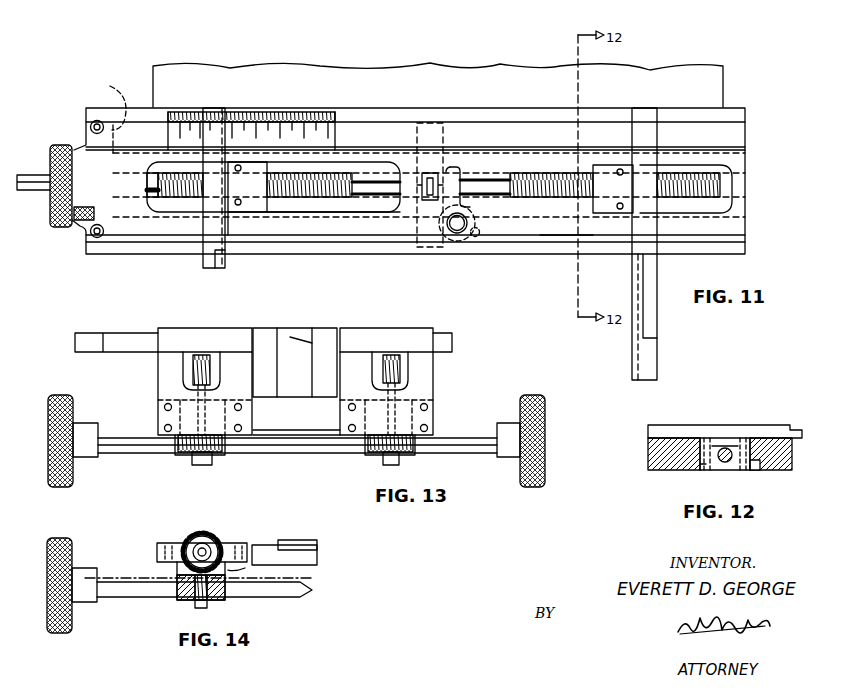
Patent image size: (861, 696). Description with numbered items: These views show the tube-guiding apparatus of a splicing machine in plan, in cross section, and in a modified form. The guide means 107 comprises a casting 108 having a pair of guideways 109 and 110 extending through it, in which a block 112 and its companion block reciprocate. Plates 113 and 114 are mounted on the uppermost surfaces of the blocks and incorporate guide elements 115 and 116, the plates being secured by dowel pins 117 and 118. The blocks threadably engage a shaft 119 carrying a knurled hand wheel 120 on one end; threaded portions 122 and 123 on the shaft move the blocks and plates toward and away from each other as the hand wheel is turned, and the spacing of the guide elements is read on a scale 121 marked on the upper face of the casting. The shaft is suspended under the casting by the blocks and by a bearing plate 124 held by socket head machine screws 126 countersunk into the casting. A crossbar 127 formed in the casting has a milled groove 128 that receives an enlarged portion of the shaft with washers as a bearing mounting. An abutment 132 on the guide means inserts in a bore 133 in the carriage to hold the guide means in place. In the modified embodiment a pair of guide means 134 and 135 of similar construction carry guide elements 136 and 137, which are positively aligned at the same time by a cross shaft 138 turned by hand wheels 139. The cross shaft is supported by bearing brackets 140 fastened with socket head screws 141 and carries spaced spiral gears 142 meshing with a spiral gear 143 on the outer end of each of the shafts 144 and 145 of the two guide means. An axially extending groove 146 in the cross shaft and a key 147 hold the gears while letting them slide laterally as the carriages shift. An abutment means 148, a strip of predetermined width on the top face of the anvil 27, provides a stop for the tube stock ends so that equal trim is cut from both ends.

In FIG. 11, the anvil 27 is at (500, 92).
In FIG. 13, the anvil 27 is at (272, 360).
In FIG. 14, the anvil 27 is at (312, 553).
In FIG. 11, the guide means 107 is at (160, 258).
In FIG. 11, the casting 108 is at (365, 228).
In FIG. 12, the casting 108 is at (648, 440).
In FIG. 11, the guideway 109 is at (320, 214).
In FIG. 11, the guideway 110 is at (550, 215).
In FIG. 12, the guideway 110 is at (748, 462).
In FIG. 12, the block 112 is at (700, 466).
In FIG. 11, the plate 113 is at (233, 215).
In FIG. 11, the plate 114 is at (620, 210).
In FIG. 12, the plate 114 is at (744, 445).
In FIG. 11, the guide element 115 is at (207, 262).
In FIG. 11, the guide element 116 is at (648, 355).
In FIG. 12, the guide element 116 is at (778, 425).
In FIG. 11, the dowel pin 117 is at (242, 205).
In FIG. 11, the dowel pin 118 is at (620, 168).
In FIG. 12, the dowel pin 118 is at (712, 472).
In FIG. 11, the shaft 119 is at (500, 190).
In FIG. 12, the shaft 119 is at (726, 447).
In FIG. 11, the knurled hand wheel 120 is at (58, 200).
In FIG. 11, the scale 121 is at (250, 115).
In FIG. 11, the threaded portion 122 is at (330, 185).
In FIG. 11, the threaded portion 123 is at (530, 185).
In FIG. 12, the threaded portion 123 is at (720, 448).
In FIG. 11, the bearing plate 124 is at (104, 106).
In FIG. 11, the socket head machine screws 126 is at (91, 126).
In FIG. 11, the crossbar 127 is at (462, 168).
In FIG. 11, the milled groove 128 is at (435, 135).
In FIG. 11, the abutment 132 is at (457, 232).
In FIG. 11, the bore 133 is at (476, 240).
In FIG. 13, the guide means 134 is at (440, 380).
In FIG. 13, the guide means 135 is at (160, 372).
In FIG. 14, the guide means 135 is at (178, 544).
In FIG. 13, the guide element 136 is at (438, 348).
In FIG. 13, the guide element 137 is at (78, 347).
In FIG. 13, the cross shaft 138 is at (292, 440).
In FIG. 14, the cross shaft 138 is at (300, 595).
In FIG. 13, the hand wheels 139 is at (72, 482).
In FIG. 14, the hand wheels 139 is at (62, 634).
In FIG. 13, the bearing brackets 140 is at (220, 458).
In FIG. 14, the bearing brackets 140 is at (240, 560).
In FIG. 13, the socket head screws 141 is at (163, 425).
In FIG. 14, the socket head screws 141 is at (185, 540).
In FIG. 14, the spiral gears 142 is at (200, 600).
In FIG. 13, the spiral gear 143 is at (180, 452).
In FIG. 14, the spiral gear 143 is at (178, 568).
In FIG. 13, the shaft 144 is at (398, 384).
In FIG. 13, the shaft 145 is at (195, 373).
In FIG. 13, the axially extending groove 146 is at (338, 456).
In FIG. 14, the key 147 is at (235, 575).
In FIG. 13, the abutment means 148 is at (320, 330).
In FIG. 14, the abutment means 148 is at (292, 542).